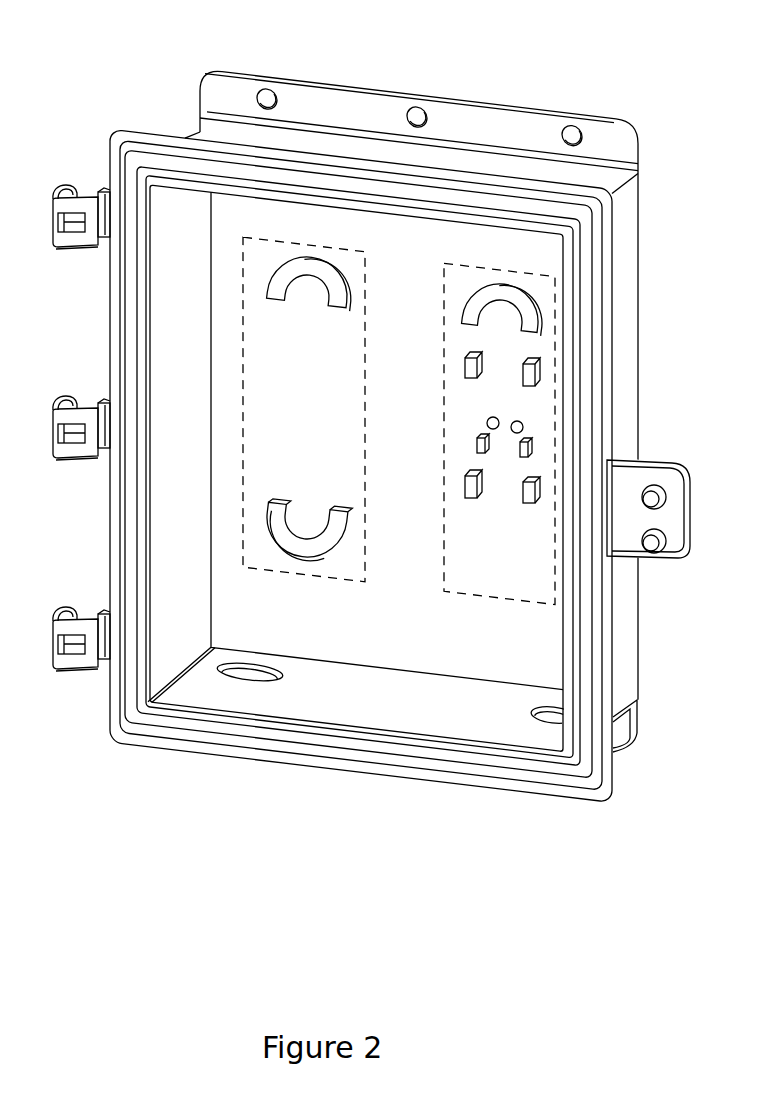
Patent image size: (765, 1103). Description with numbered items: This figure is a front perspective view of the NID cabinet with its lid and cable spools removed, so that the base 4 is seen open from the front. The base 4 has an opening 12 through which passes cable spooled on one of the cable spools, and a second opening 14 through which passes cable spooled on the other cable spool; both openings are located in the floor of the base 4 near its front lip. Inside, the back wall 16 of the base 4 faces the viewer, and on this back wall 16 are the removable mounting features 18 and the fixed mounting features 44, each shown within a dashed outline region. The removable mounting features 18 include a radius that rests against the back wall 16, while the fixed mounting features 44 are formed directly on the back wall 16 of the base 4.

The base 4 is at (200, 135).
The back wall 16 is at (408, 257).
The fixed mounting features 44 is at (303, 575).
The removable mounting features 18 is at (497, 600).
The opening 12 is at (270, 677).
The opening 14 is at (540, 713).